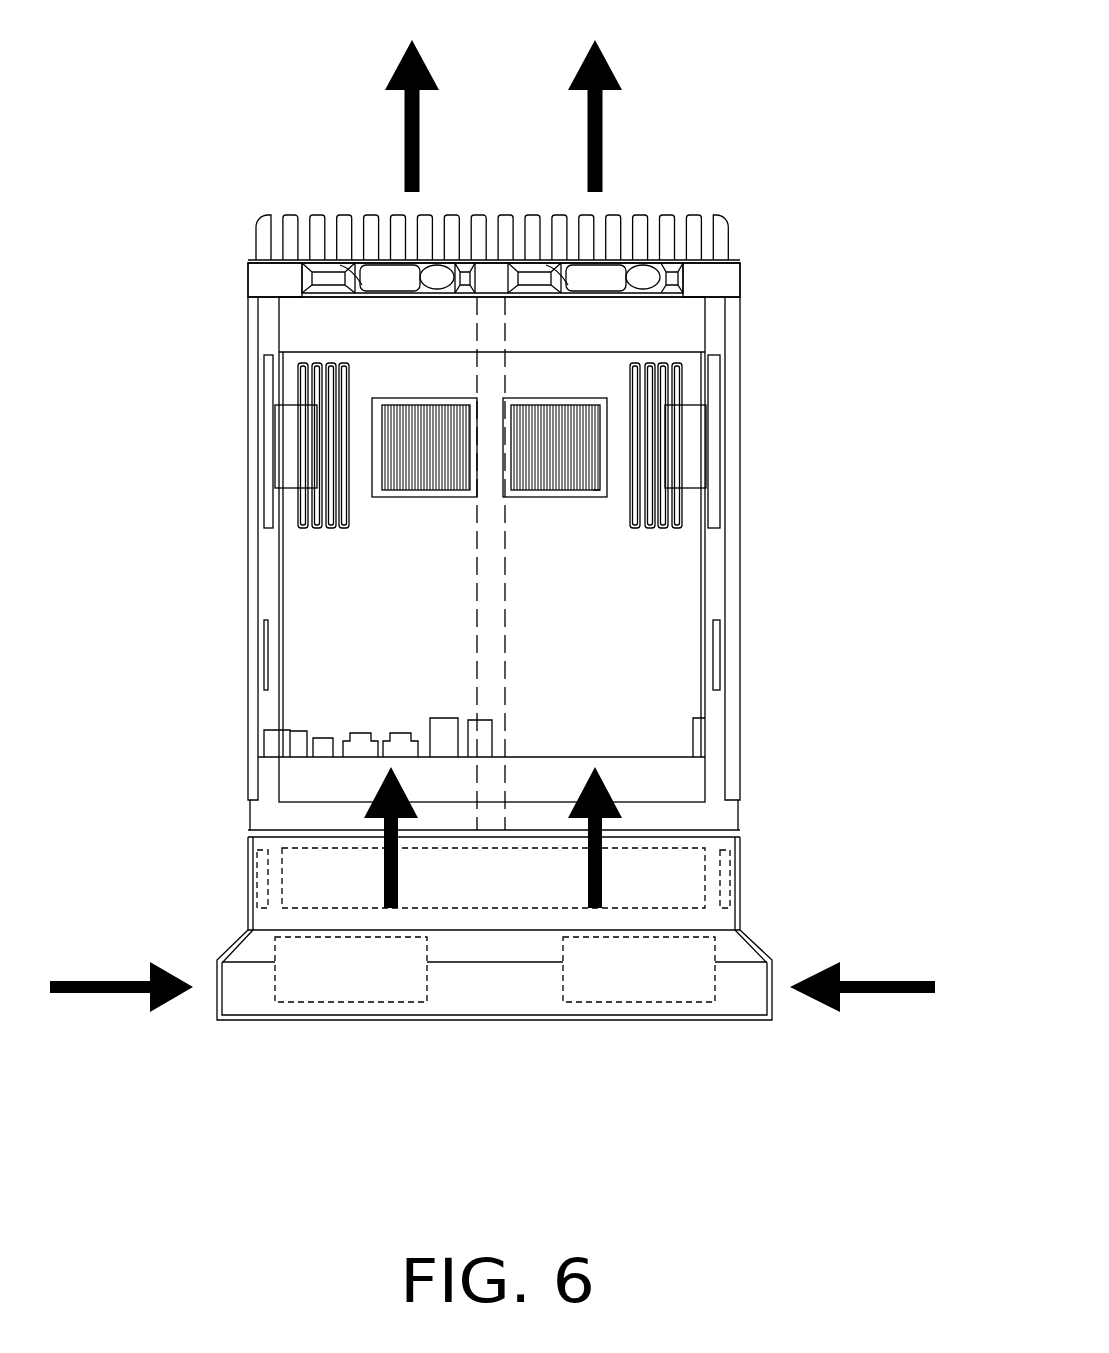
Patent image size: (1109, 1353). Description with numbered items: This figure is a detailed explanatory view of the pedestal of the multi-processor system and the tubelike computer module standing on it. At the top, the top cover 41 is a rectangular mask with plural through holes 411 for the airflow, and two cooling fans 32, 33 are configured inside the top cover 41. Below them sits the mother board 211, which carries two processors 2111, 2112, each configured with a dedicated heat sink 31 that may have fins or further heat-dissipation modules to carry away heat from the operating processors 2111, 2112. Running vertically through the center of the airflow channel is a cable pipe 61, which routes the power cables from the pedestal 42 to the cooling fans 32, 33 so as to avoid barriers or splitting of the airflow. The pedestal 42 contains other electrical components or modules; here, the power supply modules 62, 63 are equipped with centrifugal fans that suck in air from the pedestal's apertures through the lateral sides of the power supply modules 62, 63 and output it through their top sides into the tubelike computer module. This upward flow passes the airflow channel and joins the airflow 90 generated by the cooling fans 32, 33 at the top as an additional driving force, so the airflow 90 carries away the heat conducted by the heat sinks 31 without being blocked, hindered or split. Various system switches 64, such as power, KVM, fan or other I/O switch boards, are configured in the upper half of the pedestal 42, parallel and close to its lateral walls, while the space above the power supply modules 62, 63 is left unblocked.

The airflow 90 is at (606, 70).
The through holes 411 is at (680, 218).
The top cover 41 is at (545, 199).
The cooling fan 33 is at (300, 278).
The cooling fan 32 is at (680, 280).
The heat sink 31 is at (593, 490).
The mother board 211 is at (298, 600).
The processor 2111 is at (407, 498).
The processor 2112 is at (548, 498).
The cable pipe 61 is at (490, 663).
The system switches 64 is at (256, 880).
The pedestal 42 is at (733, 888).
The power supply module 62 is at (313, 997).
The power supply module 63 is at (602, 993).